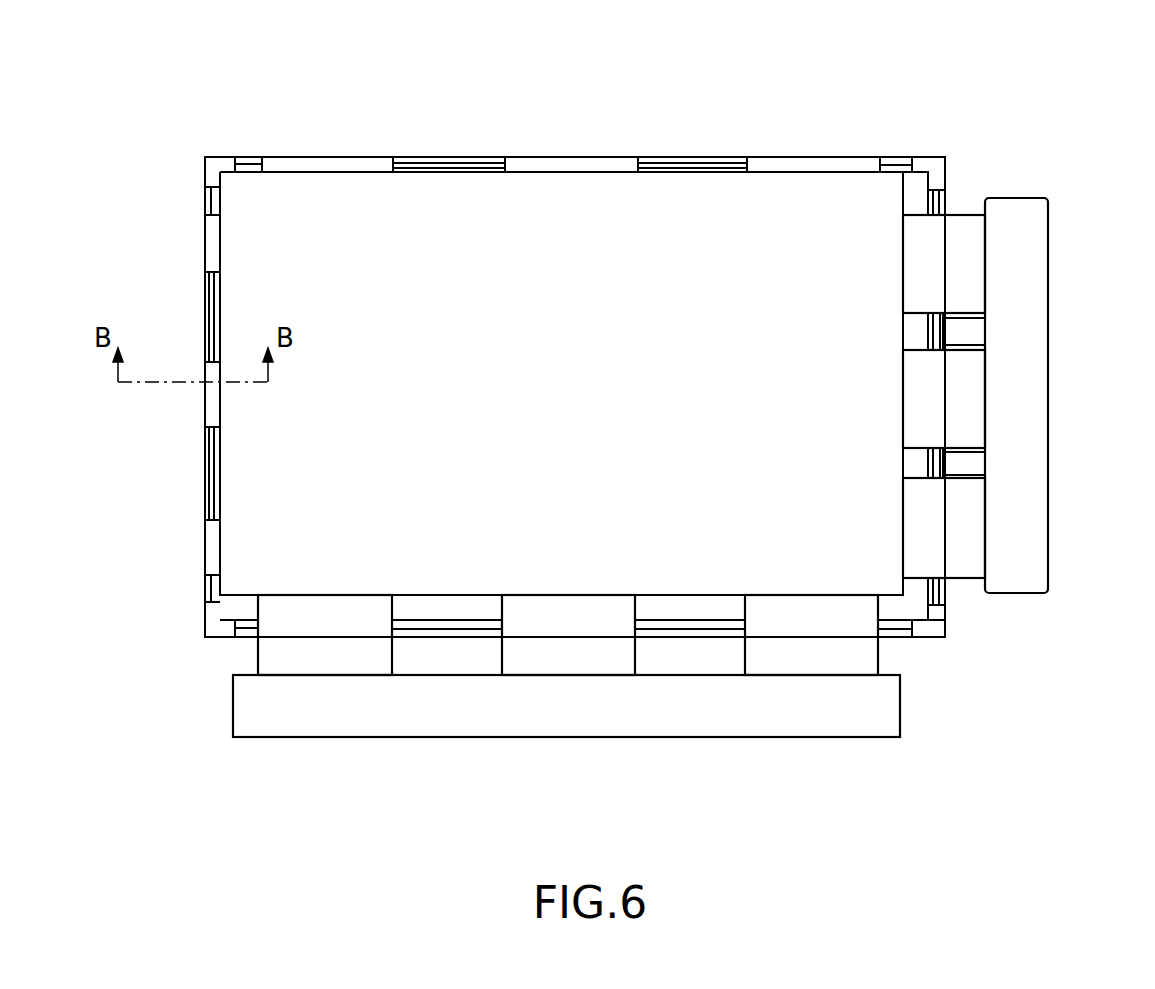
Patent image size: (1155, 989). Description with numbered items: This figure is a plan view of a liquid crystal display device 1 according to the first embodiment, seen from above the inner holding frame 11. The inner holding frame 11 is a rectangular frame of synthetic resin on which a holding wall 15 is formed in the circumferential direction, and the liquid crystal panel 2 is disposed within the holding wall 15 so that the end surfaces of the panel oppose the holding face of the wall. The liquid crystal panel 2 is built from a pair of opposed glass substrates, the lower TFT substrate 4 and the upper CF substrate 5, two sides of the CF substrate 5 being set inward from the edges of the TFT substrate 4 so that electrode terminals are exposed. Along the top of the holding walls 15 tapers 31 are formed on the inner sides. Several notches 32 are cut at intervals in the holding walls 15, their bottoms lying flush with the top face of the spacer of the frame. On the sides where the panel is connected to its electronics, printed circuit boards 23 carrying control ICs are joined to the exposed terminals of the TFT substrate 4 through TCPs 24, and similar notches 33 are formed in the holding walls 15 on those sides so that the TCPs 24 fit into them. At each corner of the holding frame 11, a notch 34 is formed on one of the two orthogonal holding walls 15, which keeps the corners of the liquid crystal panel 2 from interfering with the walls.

The liquid crystal display device 1 is at (845, 114).
The liquid crystal panel 2 is at (877, 194).
The TFT substrate 4 is at (912, 612).
The CF substrate 5 is at (786, 195).
The inner holding frame 11 is at (598, 158).
The holding wall 15 is at (241, 157).
The printed circuit board 23 is at (1030, 290).
The TCP 24 is at (962, 228).
The taper 31 is at (220, 202).
The notch 32 is at (392, 157).
The notch 33 is at (930, 318).
The notch 34 is at (208, 170).